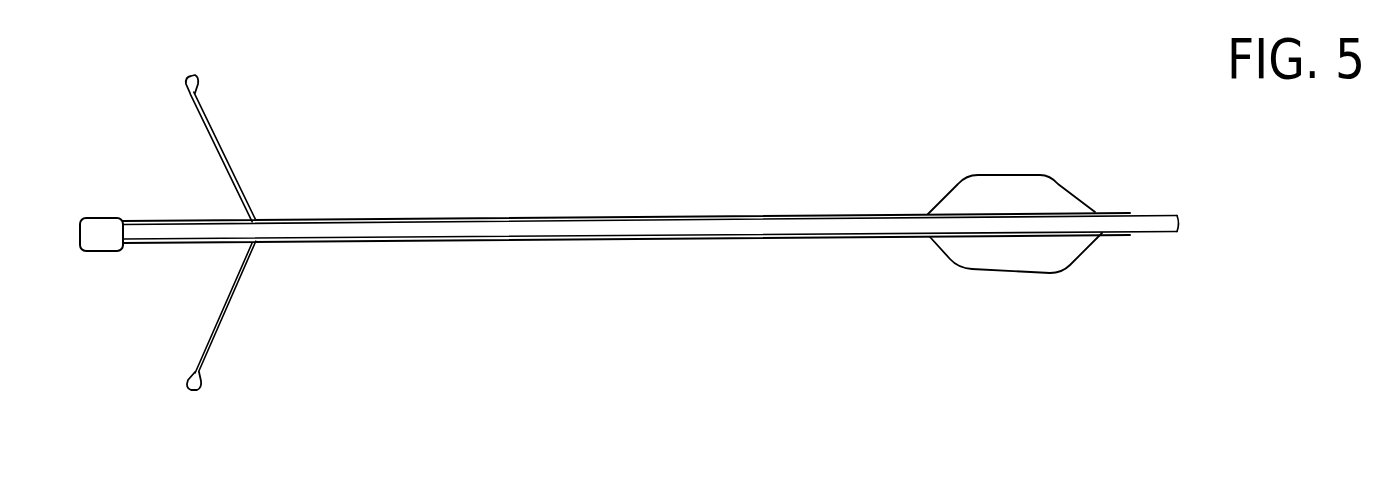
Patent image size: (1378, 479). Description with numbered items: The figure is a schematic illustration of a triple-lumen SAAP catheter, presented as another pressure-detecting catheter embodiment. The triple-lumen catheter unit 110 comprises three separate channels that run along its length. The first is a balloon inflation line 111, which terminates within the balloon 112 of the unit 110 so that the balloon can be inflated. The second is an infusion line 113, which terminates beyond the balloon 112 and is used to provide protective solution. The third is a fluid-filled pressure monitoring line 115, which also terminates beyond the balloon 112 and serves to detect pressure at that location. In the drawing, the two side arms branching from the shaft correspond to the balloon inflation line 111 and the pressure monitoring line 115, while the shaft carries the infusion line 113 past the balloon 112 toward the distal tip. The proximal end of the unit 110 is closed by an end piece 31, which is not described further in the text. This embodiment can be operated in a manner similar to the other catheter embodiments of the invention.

The end cap / handle 31 is at (168, 233).
The triple-lumen catheter unit 110 is at (755, 196).
The balloon inflation line 111 is at (223, 322).
The balloon 112 is at (1023, 180).
The infusion line 113 is at (578, 227).
The pressure monitoring line 115 is at (221, 143).